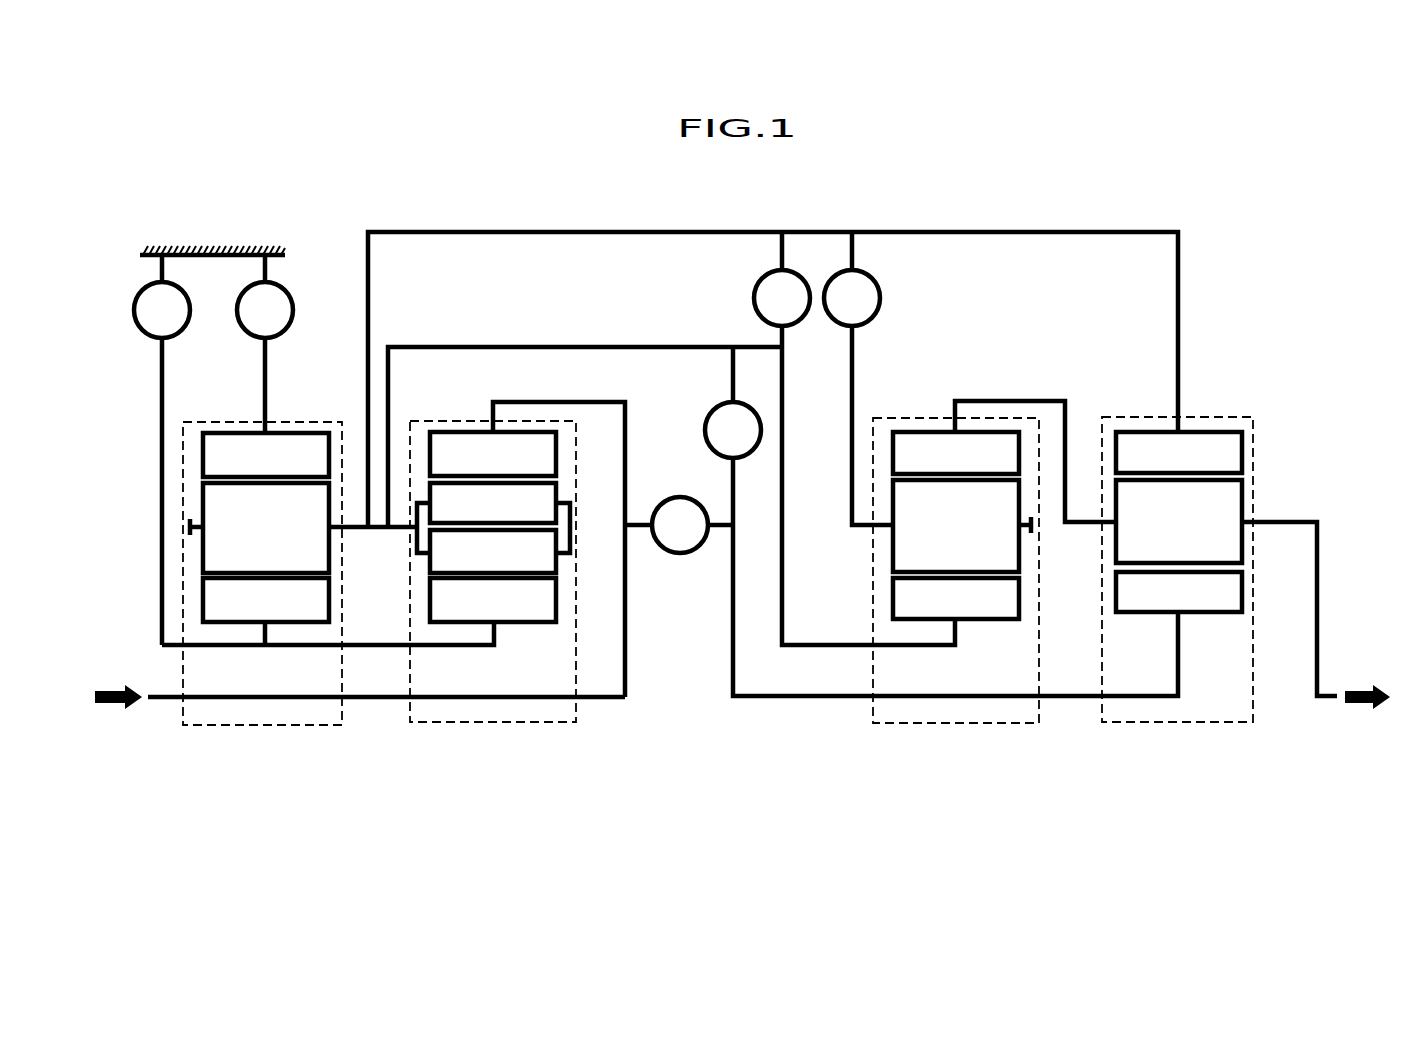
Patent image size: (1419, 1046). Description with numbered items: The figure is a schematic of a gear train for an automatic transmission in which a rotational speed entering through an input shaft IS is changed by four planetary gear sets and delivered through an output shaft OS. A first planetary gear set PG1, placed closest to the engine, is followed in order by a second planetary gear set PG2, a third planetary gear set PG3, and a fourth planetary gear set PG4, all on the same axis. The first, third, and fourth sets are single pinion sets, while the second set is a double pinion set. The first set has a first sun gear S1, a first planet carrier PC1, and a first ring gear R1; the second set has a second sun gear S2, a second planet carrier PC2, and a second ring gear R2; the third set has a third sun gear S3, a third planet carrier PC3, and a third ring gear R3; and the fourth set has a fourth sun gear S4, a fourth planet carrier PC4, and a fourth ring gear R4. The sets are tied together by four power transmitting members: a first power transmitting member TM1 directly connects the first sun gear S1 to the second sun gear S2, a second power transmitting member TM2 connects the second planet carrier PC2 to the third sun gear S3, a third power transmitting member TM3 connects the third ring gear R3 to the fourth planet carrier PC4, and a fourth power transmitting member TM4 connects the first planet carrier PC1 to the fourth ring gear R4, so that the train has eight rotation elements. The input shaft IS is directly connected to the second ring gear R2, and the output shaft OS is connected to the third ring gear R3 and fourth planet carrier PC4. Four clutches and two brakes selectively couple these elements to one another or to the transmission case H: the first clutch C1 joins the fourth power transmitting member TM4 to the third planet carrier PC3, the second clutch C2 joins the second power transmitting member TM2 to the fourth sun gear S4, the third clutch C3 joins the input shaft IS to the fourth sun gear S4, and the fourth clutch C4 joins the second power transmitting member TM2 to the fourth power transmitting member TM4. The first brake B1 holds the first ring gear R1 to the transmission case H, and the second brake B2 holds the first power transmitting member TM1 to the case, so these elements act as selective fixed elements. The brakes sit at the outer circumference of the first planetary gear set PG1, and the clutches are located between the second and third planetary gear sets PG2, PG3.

The transmission case H is at (212, 227).
The first brake B1 is at (265, 344).
The second brake B2 is at (162, 450).
The first clutch C1 is at (858, 378).
The second clutch C2 is at (941, 521).
The third clutch C3 is at (679, 525).
The fourth clutch C4 is at (854, 438).
The first planetary gear set PG1 is at (300, 624).
The second planetary gear set PG2 is at (517, 614).
The third planetary gear set PG3 is at (927, 622).
The fourth planetary gear set PG4 is at (1219, 621).
The first ring gear R1 is at (266, 455).
The second ring gear R2 is at (527, 549).
The third ring gear R3 is at (956, 453).
The fourth ring gear R4 is at (1179, 452).
The first sun gear S1 is at (266, 600).
The second sun gear S2 is at (493, 600).
The third sun gear S3 is at (956, 598).
The fourth sun gear S4 is at (1179, 592).
The first planet carrier PC1 is at (303, 532).
The second planet carrier PC2 is at (572, 528).
The third planet carrier PC3 is at (862, 528).
The fourth planet carrier PC4 is at (1226, 581).
The first power transmitting member TM1 is at (328, 652).
The second power transmitting member TM2 is at (585, 408).
The third power transmitting member TM3 is at (1035, 432).
The fourth power transmitting member TM4 is at (773, 350).
The input shaft IS is at (354, 704).
The output shaft OS is at (1354, 704).